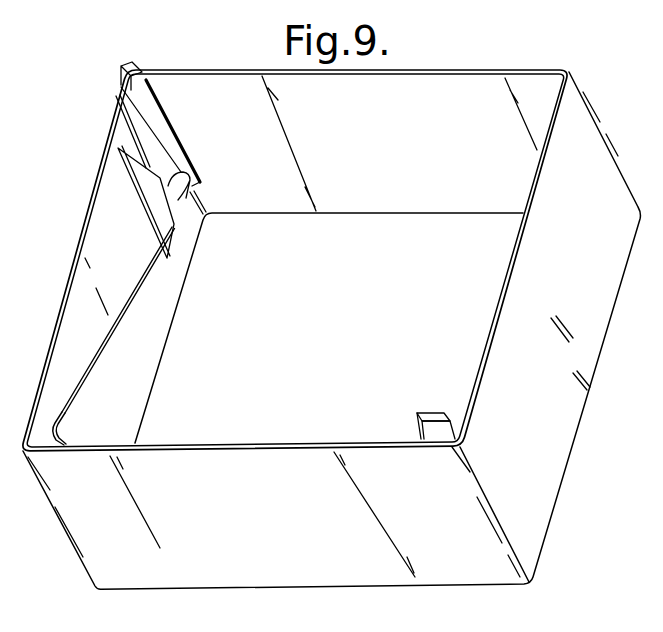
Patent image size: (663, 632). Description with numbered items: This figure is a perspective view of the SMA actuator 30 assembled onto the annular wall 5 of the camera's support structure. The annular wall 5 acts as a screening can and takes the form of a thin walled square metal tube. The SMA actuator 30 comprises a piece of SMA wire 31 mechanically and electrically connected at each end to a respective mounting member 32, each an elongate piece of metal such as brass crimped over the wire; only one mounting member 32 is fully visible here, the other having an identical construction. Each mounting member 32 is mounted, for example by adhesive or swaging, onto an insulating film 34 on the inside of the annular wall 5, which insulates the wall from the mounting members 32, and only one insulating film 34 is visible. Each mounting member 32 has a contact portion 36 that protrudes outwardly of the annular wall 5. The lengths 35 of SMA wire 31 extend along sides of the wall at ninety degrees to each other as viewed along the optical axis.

The annular wall 5 is at (566, 405).
The SMA actuator 30 is at (130, 308).
The SMA wire 31 is at (108, 332).
The mounting member 32 is at (149, 110).
The insulating film 34 is at (150, 212).
The length of SMA wire 35 is at (115, 418).
The contact portion 36 is at (136, 72).